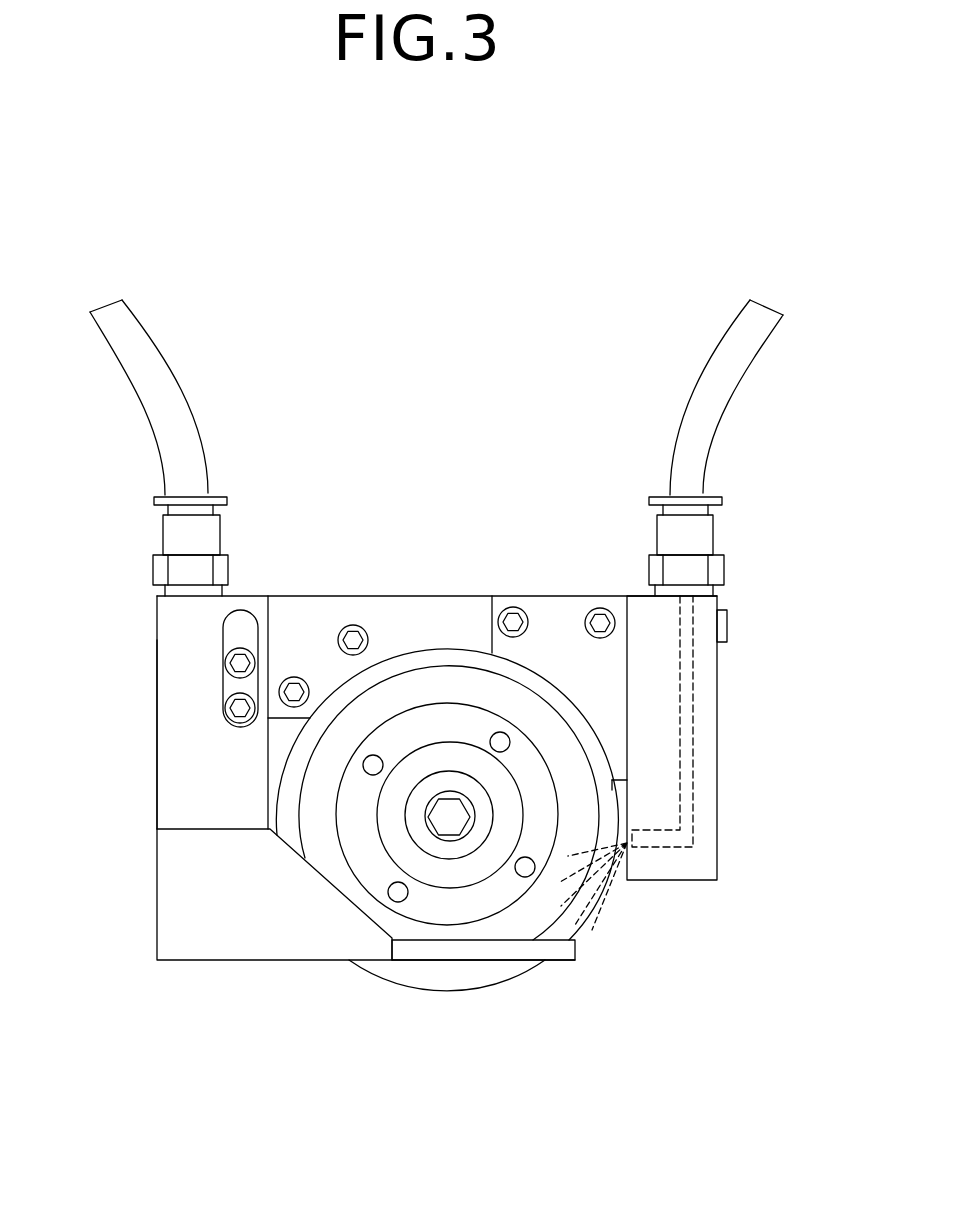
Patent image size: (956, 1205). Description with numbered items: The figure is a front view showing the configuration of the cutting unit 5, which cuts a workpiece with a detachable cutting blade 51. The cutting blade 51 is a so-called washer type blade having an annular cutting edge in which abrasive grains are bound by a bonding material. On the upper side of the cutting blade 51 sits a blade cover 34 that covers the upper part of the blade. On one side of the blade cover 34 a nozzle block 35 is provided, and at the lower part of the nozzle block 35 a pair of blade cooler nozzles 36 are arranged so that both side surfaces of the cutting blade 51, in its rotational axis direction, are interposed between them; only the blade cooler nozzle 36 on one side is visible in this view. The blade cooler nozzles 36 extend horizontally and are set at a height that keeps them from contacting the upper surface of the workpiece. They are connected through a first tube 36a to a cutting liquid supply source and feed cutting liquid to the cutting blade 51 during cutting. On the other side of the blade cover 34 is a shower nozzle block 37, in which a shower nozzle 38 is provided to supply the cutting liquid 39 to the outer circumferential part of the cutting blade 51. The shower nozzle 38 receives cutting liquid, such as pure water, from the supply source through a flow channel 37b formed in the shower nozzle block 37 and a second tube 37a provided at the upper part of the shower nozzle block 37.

The cutting unit 5 is at (473, 412).
The blade cover 34 is at (393, 592).
The nozzle block 35 is at (157, 695).
The blade cooler nozzle 36 is at (575, 950).
The first tube 36a is at (203, 440).
The shower nozzle block 37 is at (717, 695).
The second tube 37a is at (673, 442).
The flow channel 37b is at (697, 820).
The shower nozzle 38 is at (637, 852).
The cutting liquid 39 is at (598, 905).
The cutting blade 51 is at (502, 974).